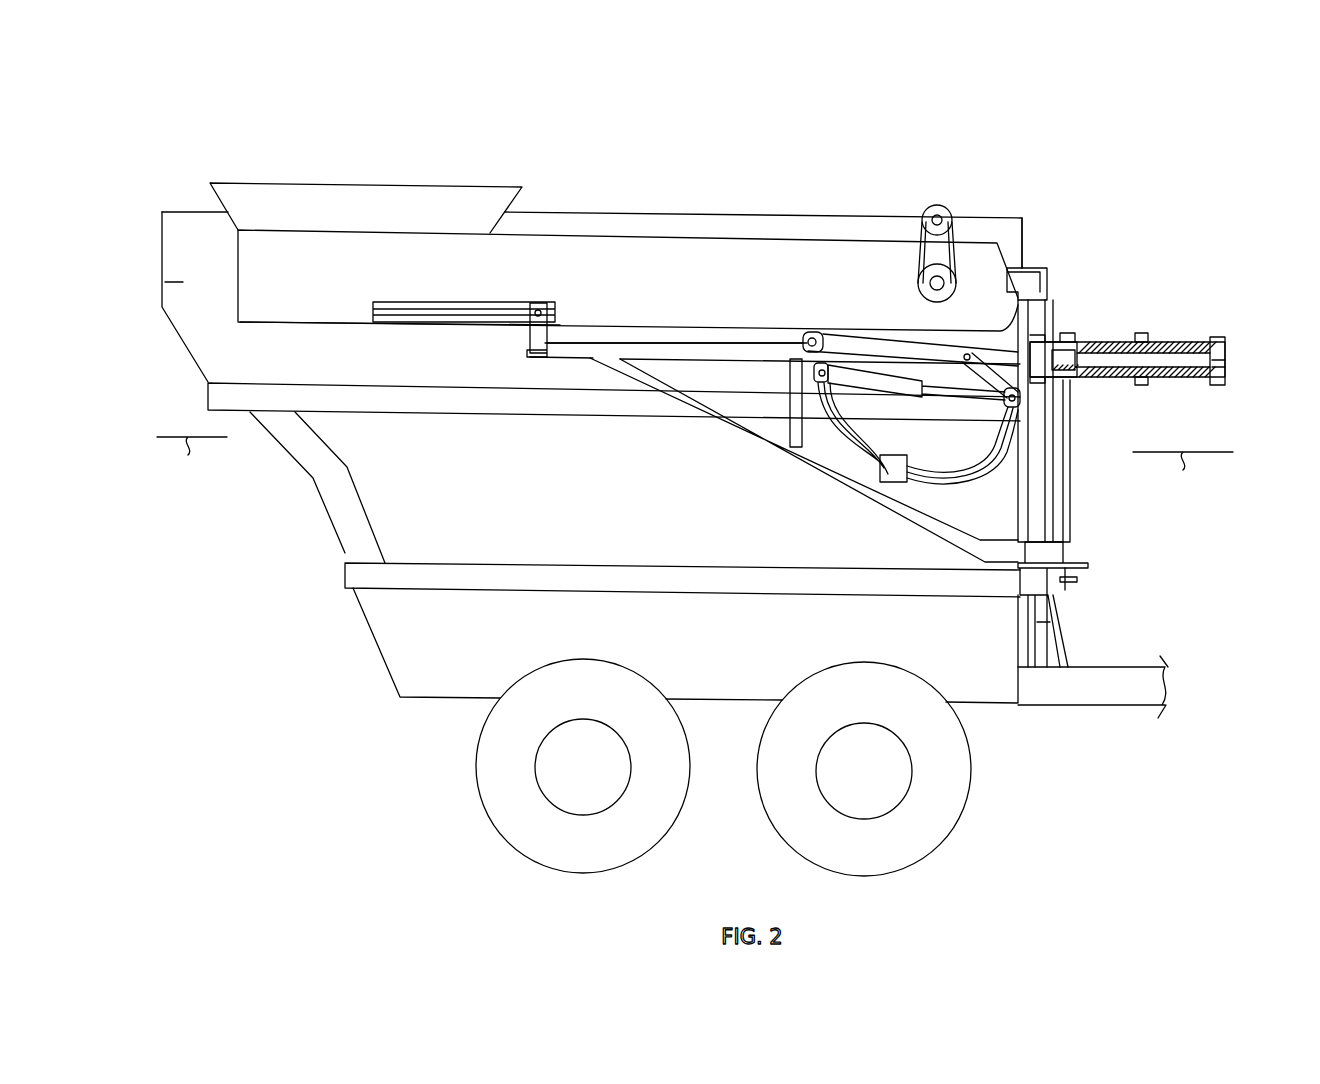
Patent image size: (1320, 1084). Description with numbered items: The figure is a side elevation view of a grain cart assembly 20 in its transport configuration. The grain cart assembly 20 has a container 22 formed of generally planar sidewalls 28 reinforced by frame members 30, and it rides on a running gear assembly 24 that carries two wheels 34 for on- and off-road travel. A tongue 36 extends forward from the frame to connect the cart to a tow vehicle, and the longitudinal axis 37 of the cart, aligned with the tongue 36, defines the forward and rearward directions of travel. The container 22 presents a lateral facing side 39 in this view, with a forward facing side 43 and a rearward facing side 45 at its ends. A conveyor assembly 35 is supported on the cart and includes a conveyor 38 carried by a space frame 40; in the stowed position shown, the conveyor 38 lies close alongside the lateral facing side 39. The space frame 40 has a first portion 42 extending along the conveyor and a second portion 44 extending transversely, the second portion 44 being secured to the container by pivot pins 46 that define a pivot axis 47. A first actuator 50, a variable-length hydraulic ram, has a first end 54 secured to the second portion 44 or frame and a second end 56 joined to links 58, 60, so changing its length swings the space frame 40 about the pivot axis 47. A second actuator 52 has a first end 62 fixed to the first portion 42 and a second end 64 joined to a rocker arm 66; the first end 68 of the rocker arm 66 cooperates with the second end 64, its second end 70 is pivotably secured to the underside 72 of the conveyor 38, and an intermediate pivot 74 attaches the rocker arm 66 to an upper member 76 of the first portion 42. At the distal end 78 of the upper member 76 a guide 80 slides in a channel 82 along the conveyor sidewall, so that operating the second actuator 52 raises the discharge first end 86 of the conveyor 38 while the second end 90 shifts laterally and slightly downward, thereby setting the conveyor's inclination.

The grain cart assembly 20 is at (688, 500).
The container 22 is at (183, 282).
The running gear assembly 24 is at (688, 662).
The sidewalls 28 is at (576, 539).
The frame members 30 is at (473, 562).
The wheels 34 is at (795, 845).
The conveyor assembly 35 is at (593, 346).
The tongue 36 is at (1085, 695).
The longitudinal axis 37 is at (695, 471).
The conveyor 38 is at (768, 270).
The lateral facing side 39 is at (395, 543).
The space frame 40 is at (1143, 430).
The first portion 42 is at (733, 422).
The forward facing side 43 is at (1022, 232).
The second portion 44 is at (1035, 477).
The rearward facing side 45 is at (162, 240).
The pivot pins 46 is at (1066, 335).
The pivot axis 47 is at (1063, 620).
The first actuator 50 is at (1155, 357).
The second actuator 52 is at (905, 385).
The first end 54 is at (1092, 375).
The second end 56 is at (1213, 365).
The link 58 is at (1193, 342).
The link 60 is at (1100, 344).
The first end 62 is at (850, 378).
The second end 64 is at (1010, 410).
The rocker arm 66 is at (905, 345).
The first end 68 is at (975, 395).
The second end 70 is at (808, 333).
The underside 72 is at (655, 333).
The pivot 74 is at (968, 262).
The upper member 76 is at (720, 348).
The distal end 78 is at (527, 352).
The guide 80 is at (540, 305).
The channel 82 is at (482, 303).
The first end 86 is at (1035, 260).
The second end 90 is at (238, 270).